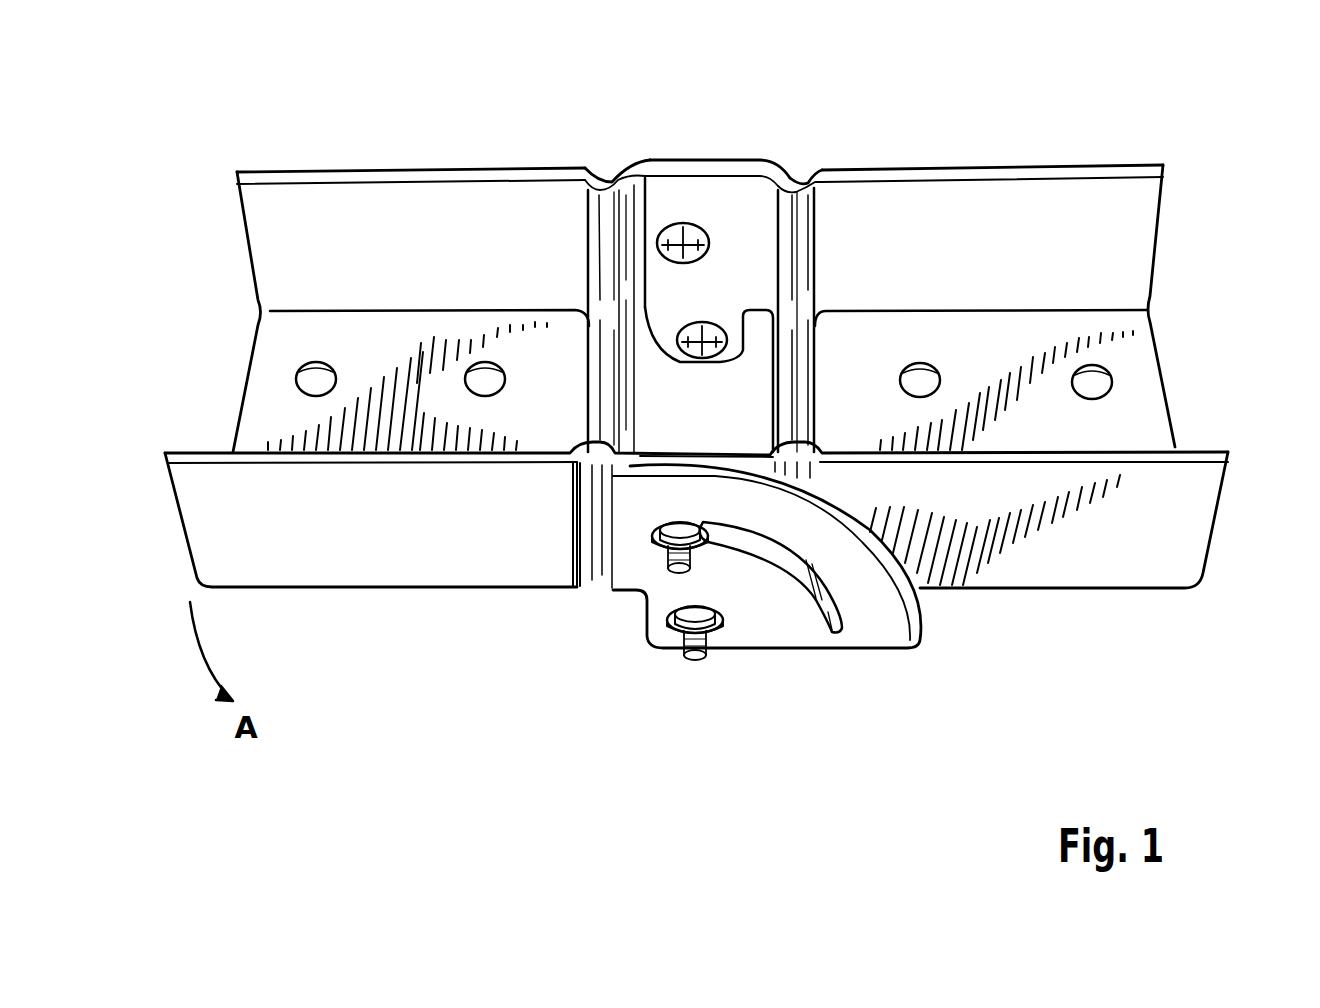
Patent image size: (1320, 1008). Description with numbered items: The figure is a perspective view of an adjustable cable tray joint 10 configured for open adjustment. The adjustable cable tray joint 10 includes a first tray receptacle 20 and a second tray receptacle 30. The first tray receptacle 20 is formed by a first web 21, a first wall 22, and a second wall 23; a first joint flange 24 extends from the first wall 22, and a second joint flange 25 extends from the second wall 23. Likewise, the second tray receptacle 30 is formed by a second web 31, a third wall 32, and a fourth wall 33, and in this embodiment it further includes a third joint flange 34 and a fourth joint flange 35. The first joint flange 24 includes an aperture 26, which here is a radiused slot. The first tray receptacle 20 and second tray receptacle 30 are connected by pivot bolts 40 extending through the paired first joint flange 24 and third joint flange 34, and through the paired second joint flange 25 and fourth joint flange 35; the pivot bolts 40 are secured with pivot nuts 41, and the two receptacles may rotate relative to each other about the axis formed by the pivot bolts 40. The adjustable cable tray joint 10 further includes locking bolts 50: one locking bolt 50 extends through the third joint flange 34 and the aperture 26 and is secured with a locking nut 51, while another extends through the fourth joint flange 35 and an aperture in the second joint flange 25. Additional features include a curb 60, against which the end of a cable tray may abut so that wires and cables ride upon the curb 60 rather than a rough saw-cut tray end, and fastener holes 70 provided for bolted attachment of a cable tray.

The adjustable cable tray joint 10 is at (363, 101).
The first tray receptacle 20 is at (383, 590).
The first web 21 is at (277, 397).
The first wall 22 is at (452, 547).
The second wall 23 is at (458, 215).
The first joint flange 24 is at (793, 617).
The second joint flange 25 is at (642, 162).
The aperture 26 is at (834, 628).
The second tray receptacle 30 is at (1080, 590).
The second web 31 is at (1137, 373).
The third wall 32 is at (1017, 570).
The fourth wall 33 is at (912, 218).
The third joint flange 34 is at (663, 453).
The fourth joint flange 35 is at (728, 202).
The pivot bolts 40 is at (700, 659).
The pivot nuts 41 is at (677, 642).
The locking bolts 50 is at (685, 233).
The locking nut 51 is at (662, 549).
The curb 60 is at (800, 368).
The fastener holes 70 is at (925, 380).